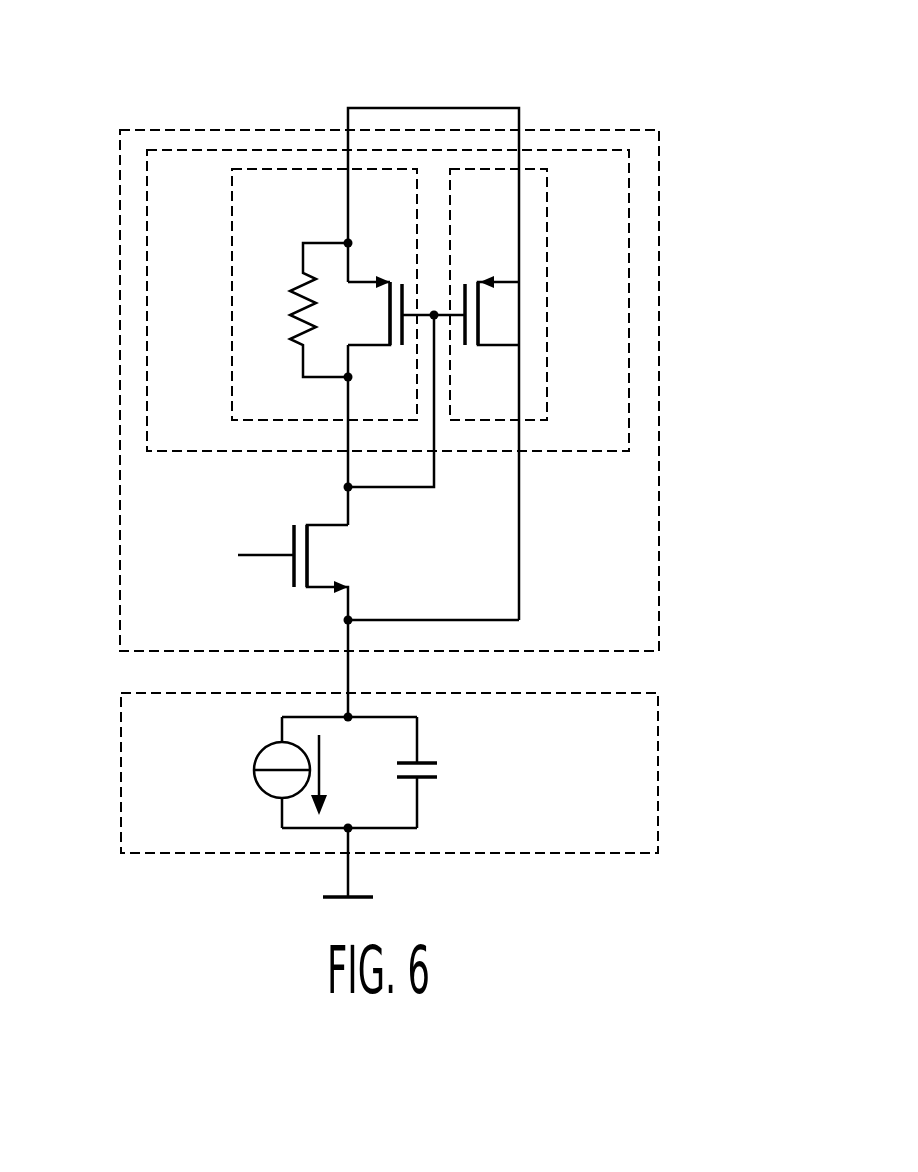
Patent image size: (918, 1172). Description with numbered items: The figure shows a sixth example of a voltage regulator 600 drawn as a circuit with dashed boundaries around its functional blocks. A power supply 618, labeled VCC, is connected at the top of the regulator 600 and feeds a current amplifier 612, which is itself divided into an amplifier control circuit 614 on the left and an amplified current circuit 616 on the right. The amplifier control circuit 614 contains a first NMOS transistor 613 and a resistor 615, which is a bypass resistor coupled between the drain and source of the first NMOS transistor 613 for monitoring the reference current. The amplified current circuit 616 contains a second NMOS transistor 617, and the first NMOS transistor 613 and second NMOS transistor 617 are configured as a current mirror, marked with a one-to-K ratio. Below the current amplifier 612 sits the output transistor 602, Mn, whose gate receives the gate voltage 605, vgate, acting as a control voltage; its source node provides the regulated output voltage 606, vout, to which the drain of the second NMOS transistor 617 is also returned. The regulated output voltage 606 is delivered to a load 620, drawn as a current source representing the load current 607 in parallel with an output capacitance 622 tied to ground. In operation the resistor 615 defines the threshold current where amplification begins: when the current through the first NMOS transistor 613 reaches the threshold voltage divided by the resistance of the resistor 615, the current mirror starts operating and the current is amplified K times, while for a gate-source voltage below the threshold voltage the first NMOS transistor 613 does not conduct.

The voltage regulator 600 is at (659, 478).
The output transistor 602 is at (287, 577).
The gate voltage 605 is at (235, 525).
The regulated output voltage 606 is at (519, 590).
The load current 607 is at (322, 770).
The current amplifier 612 is at (571, 451).
The first NMOS transistor 613 is at (380, 282).
The amplifier control circuit 614 is at (230, 310).
The resistor 615 is at (295, 290).
The amplified current circuit 616 is at (546, 295).
The second NMOS transistor 617 is at (490, 282).
The power supply 618 is at (518, 108).
The load 620 is at (659, 755).
The output capacitance 622 is at (430, 780).